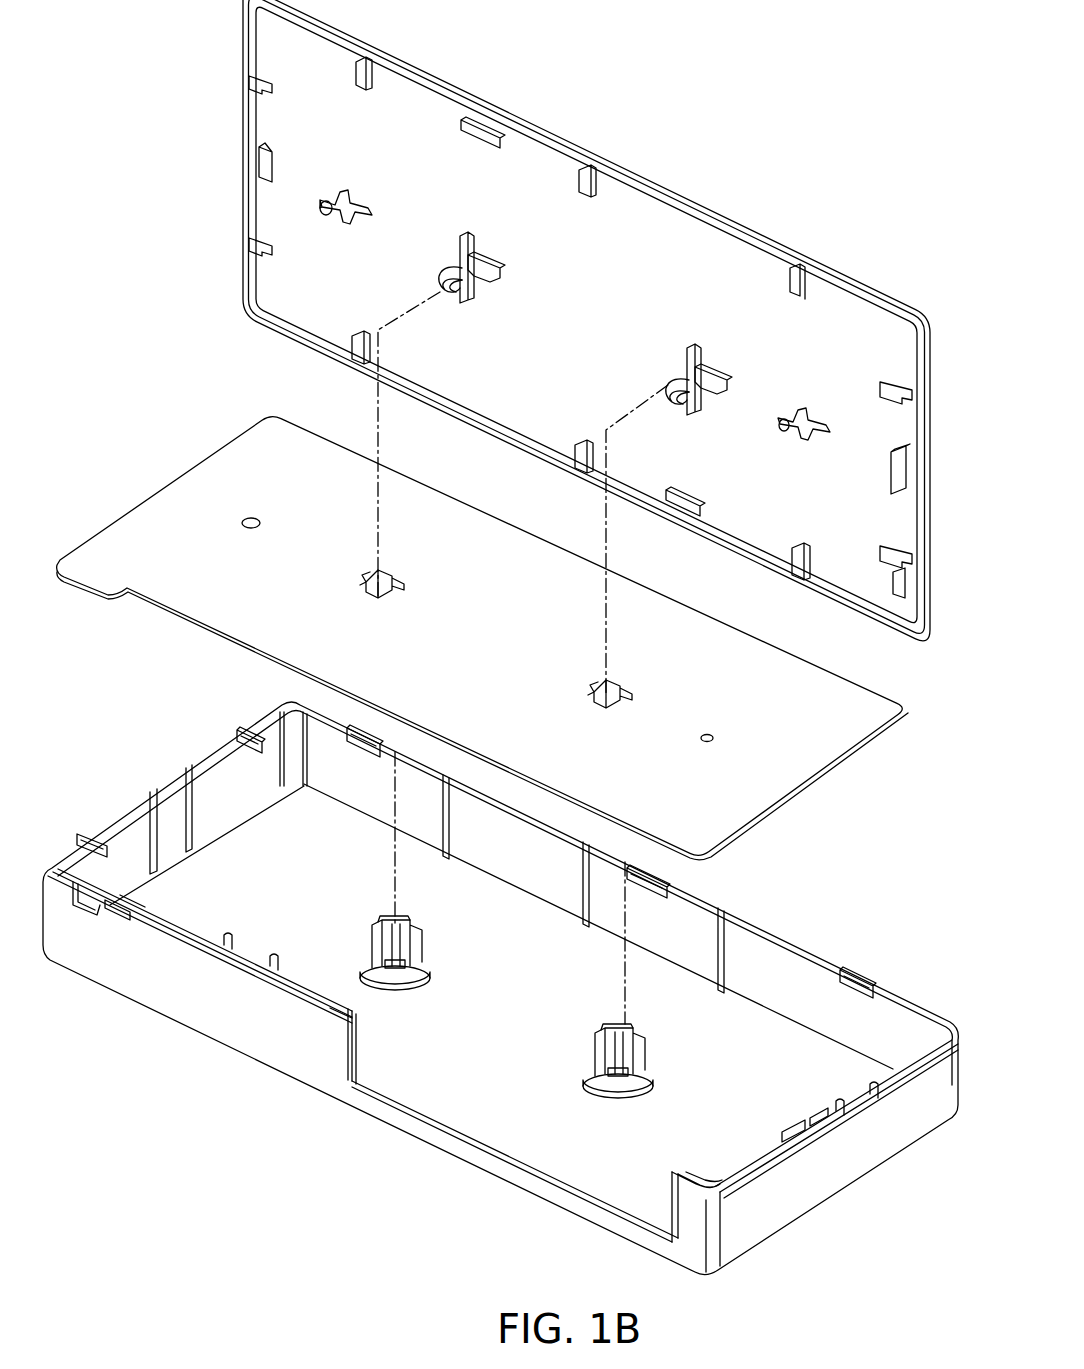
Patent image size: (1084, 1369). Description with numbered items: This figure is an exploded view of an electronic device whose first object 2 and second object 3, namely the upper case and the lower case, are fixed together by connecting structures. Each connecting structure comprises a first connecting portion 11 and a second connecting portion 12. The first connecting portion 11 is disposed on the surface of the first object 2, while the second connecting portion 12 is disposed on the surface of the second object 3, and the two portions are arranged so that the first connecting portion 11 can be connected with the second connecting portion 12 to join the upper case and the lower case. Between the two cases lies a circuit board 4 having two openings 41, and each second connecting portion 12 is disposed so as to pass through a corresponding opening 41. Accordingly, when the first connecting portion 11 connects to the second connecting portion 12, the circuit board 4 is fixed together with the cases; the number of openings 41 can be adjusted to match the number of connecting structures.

The first object 2 is at (835, 278).
The first connecting portion 11 is at (458, 258).
The circuit board 4 is at (800, 755).
The opening 41 is at (400, 583).
The second object 3 is at (847, 1145).
The second connecting portion 12 is at (390, 943).